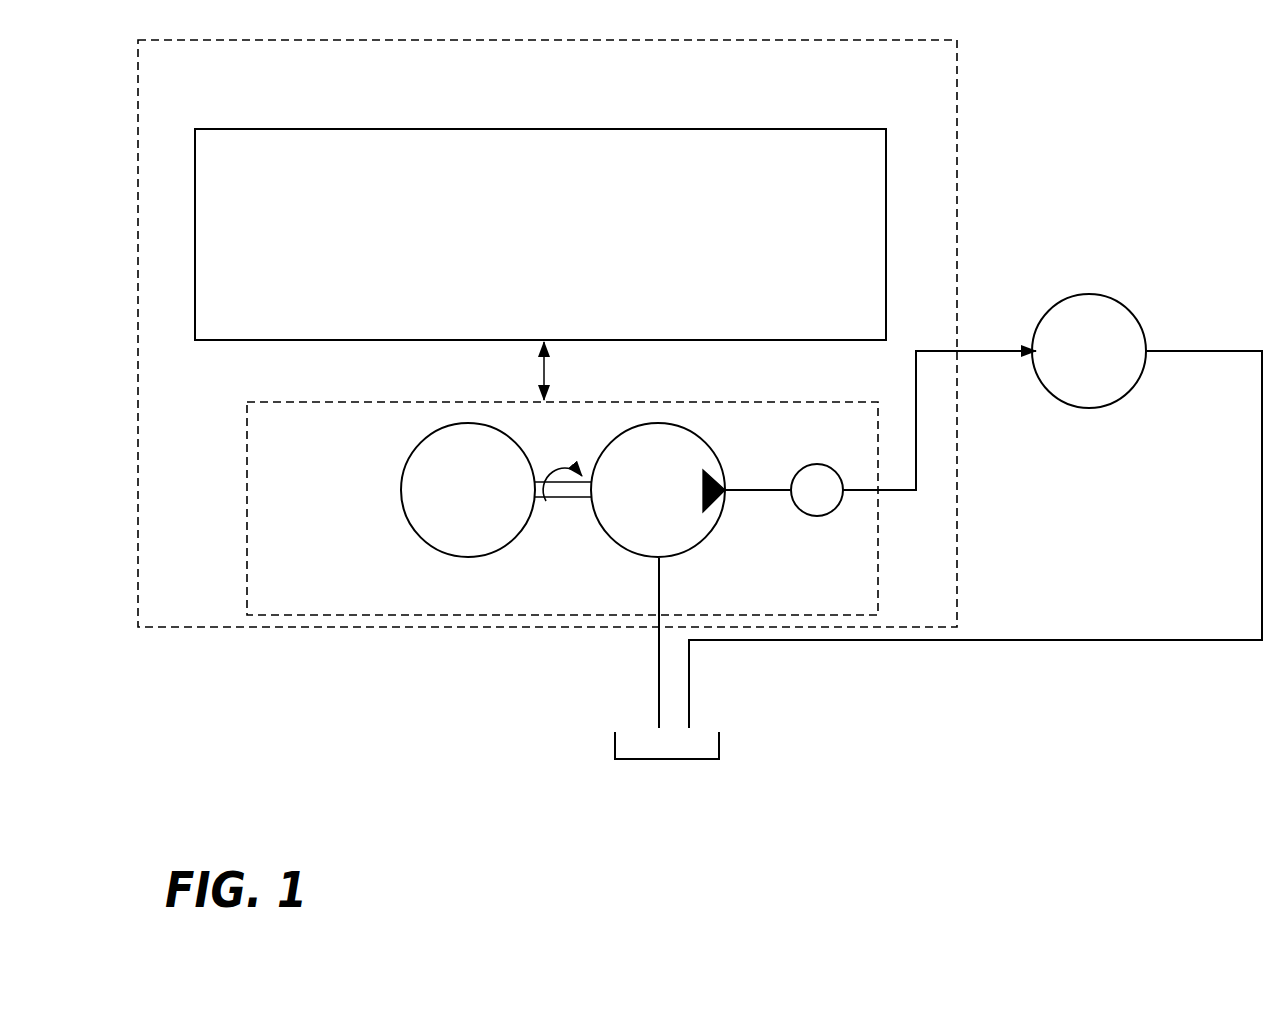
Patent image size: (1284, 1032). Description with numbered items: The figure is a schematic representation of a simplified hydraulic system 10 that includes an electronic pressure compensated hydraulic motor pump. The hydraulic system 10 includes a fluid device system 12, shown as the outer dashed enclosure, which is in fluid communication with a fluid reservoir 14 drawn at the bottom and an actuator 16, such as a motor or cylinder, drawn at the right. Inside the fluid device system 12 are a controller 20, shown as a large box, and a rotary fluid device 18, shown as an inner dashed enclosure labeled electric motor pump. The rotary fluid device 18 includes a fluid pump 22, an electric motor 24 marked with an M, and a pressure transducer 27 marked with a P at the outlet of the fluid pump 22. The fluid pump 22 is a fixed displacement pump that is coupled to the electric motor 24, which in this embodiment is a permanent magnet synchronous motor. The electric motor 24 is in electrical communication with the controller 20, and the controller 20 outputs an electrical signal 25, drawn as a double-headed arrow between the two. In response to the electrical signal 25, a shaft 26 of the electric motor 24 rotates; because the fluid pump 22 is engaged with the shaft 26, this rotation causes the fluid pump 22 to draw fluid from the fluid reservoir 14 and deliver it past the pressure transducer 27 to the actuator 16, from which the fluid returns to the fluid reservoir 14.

The hydraulic system 10 is at (1066, 170).
The fluid device system 12 is at (962, 126).
The fluid reservoir 14 is at (695, 760).
The actuator 16 is at (1126, 308).
The rotary fluid device 18 is at (245, 467).
The controller 20 is at (540, 234).
The fluid pump 22 is at (712, 446).
The electric motor 24 is at (403, 506).
The electrical signal 25 is at (548, 370).
The shaft 26 is at (571, 500).
The pressure transducer 27 is at (812, 517).